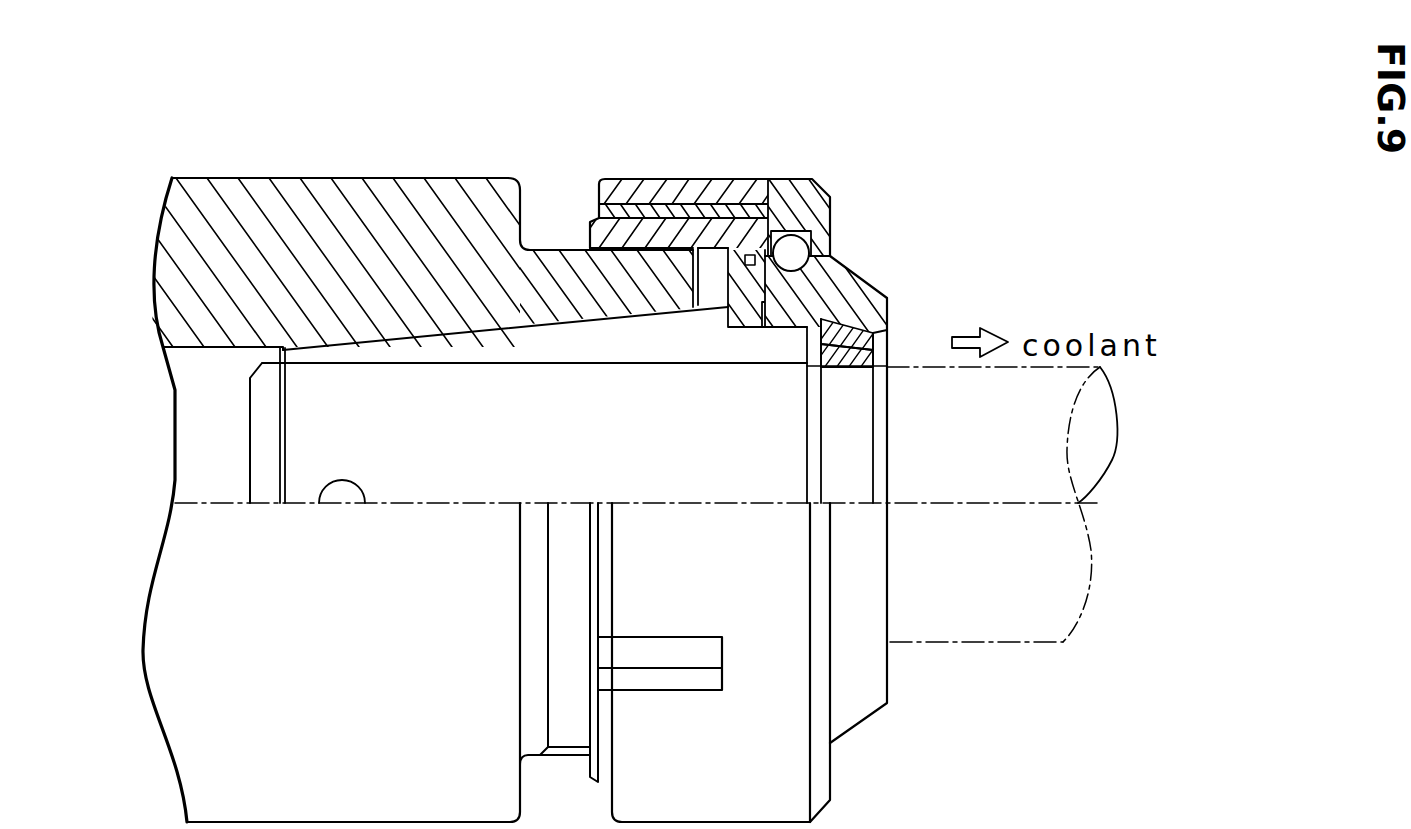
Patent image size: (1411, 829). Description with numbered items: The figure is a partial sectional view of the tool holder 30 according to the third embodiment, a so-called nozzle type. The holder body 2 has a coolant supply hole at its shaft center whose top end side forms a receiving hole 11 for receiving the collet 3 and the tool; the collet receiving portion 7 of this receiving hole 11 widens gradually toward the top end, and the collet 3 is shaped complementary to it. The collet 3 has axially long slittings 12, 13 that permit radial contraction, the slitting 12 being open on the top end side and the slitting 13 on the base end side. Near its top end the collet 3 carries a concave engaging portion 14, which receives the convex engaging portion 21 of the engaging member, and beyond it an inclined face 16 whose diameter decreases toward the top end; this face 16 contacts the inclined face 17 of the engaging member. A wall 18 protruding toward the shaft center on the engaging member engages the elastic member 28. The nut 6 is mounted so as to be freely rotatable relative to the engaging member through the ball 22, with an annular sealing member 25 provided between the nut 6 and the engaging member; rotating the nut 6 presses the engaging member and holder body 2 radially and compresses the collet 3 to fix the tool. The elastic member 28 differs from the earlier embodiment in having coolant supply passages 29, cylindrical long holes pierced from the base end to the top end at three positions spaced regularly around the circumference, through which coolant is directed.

The holder body 2 is at (203, 752).
The collet 3 is at (487, 340).
The nut 6 is at (634, 185).
The collet receiving portion 7 is at (563, 307).
The receiving hole 11 is at (424, 330).
The slitting 12 is at (777, 503).
The slitting 13 is at (340, 355).
The concave engaging portion 14 is at (731, 296).
The inclined face 16 is at (858, 275).
The inclined face 17 is at (872, 290).
The wall 18 is at (880, 318).
The convex engaging portion 21 is at (836, 262).
The ball 22 is at (793, 244).
The annular sealing member 25 is at (749, 253).
The elastic member 28 is at (876, 344).
The coolant supply passage 29 is at (887, 367).
The tool holder 30 is at (1011, 603).